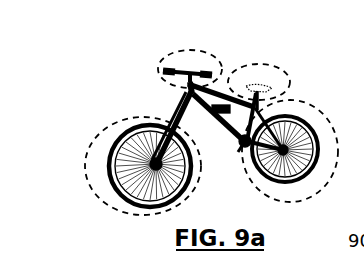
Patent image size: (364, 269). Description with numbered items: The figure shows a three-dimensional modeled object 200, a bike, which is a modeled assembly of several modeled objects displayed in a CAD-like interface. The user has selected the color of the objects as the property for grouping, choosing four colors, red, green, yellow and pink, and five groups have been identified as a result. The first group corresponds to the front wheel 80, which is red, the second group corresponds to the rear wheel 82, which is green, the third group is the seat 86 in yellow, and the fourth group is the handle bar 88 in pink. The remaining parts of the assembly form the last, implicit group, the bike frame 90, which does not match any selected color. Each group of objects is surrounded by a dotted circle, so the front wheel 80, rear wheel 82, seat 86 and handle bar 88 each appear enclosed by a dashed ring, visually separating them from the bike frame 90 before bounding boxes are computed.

The front wheel 80 is at (97, 195).
The rear wheel 82 is at (317, 186).
The seat 86 is at (265, 63).
The handle bar 88 is at (158, 73).
The bike frame 90 is at (219, 97).
The 3D modeled object 200 is at (314, 78).